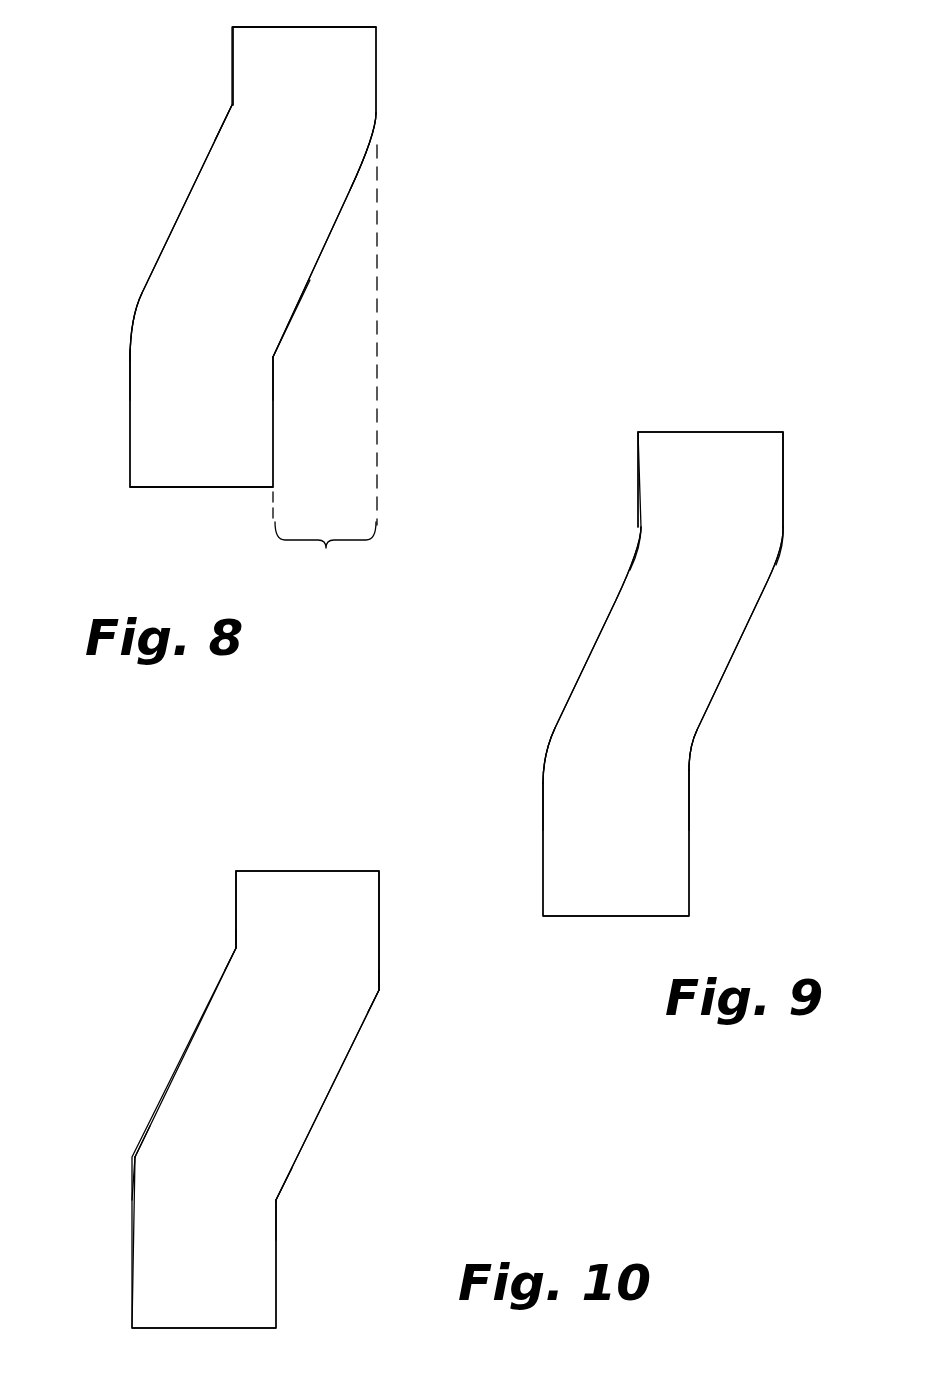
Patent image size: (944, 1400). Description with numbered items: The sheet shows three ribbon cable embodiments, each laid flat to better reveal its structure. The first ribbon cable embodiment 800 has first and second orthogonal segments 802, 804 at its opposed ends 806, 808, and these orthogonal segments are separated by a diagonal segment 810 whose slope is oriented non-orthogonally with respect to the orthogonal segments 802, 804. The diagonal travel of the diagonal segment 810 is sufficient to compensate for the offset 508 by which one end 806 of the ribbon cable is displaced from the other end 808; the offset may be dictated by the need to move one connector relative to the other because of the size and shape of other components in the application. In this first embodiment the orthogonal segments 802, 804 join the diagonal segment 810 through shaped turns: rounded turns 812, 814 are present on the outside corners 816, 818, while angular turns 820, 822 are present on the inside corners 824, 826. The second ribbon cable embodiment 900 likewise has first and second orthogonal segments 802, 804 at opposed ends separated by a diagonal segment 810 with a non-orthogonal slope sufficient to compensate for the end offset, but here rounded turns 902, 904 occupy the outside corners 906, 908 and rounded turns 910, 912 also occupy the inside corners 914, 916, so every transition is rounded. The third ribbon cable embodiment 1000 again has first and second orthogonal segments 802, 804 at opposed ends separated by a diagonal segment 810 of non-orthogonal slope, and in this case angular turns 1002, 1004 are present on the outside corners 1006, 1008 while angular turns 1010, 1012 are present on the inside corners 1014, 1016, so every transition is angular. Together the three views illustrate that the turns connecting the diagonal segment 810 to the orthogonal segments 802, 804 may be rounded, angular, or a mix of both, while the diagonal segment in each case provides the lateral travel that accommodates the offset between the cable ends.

In FIG. 8, the first ribbon cable embodiment 800 is at (648, 80).
In FIG. 8, the first orthogonal segment 802 is at (303, 108).
In FIG. 9, the first orthogonal segment 802 is at (678, 479).
In FIG. 10, the first orthogonal segment 802 is at (281, 963).
In FIG. 8, the second orthogonal segment 804 is at (153, 442).
In FIG. 9, the second orthogonal segment 804 is at (590, 843).
In FIG. 10, the second orthogonal segment 804 is at (207, 1242).
In FIG. 8, the first end 806 is at (233, 28).
In FIG. 8, the second end 808 is at (183, 487).
In FIG. 8, the diagonal segment 810 is at (257, 269).
In FIG. 9, the diagonal segment 810 is at (656, 654).
In FIG. 10, the diagonal segment 810 is at (236, 1074).
In FIG. 8, the rounded turn 812 is at (378, 116).
In FIG. 8, the rounded turn 814 is at (130, 348).
In FIG. 8, the outside corner 816 is at (413, 136).
In FIG. 8, the outside corner 818 is at (113, 305).
In FIG. 8, the angular turn 820 is at (232, 107).
In FIG. 8, the angular turn 822 is at (273, 358).
In FIG. 8, the inside corner 824 is at (192, 97).
In FIG. 8, the inside corner 826 is at (308, 348).
In FIG. 8, the offset 508 is at (324, 533).
In FIG. 9, the second ribbon cable embodiment 900 is at (372, 770).
In FIG. 9, the rounded turn 902 is at (785, 530).
In FIG. 9, the rounded turn 904 is at (543, 780).
In FIG. 9, the outside corner 906 is at (813, 495).
In FIG. 9, the outside corner 908 is at (537, 742).
In FIG. 9, the rounded turn 910 is at (640, 525).
In FIG. 9, the rounded turn 912 is at (692, 768).
In FIG. 9, the inside corner 914 is at (595, 508).
In FIG. 9, the inside corner 916 is at (727, 793).
In FIG. 10, the third ribbon cable embodiment 1000 is at (550, 1093).
In FIG. 10, the angular turn 1002 is at (379, 990).
In FIG. 10, the angular turn 1004 is at (132, 1157).
In FIG. 10, the outside corner 1006 is at (388, 1007).
In FIG. 10, the outside corner 1008 is at (117, 1168).
In FIG. 10, the angular turn 1010 is at (235, 948).
In FIG. 10, the angular turn 1012 is at (277, 1200).
In FIG. 10, the inside corner 1014 is at (187, 972).
In FIG. 10, the inside corner 1016 is at (308, 1185).